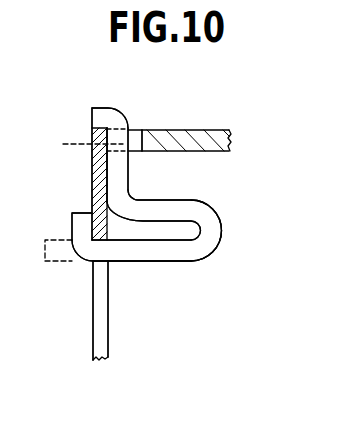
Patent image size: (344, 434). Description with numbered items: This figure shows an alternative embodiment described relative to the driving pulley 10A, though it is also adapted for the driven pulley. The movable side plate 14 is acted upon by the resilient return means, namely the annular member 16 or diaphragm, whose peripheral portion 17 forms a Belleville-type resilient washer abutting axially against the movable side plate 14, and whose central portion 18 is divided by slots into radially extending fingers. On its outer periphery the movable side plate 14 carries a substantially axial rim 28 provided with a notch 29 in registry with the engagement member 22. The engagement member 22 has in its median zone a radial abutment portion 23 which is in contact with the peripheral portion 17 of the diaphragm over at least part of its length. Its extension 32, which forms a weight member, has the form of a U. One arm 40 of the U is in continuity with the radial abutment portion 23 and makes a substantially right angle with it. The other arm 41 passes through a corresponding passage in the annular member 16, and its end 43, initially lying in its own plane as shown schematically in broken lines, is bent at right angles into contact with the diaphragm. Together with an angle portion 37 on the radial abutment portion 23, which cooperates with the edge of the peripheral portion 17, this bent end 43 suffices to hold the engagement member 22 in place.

The driving pulley 10A is at (90, 107).
The angle portion 37 is at (103, 108).
The notch 29 is at (137, 130).
The movable side plate 14 is at (208, 129).
The axial rim 28 is at (82, 142).
The peripheral portion 17 is at (92, 172).
The radial abutment portion 23 is at (118, 172).
The arm of the U 40 is at (175, 203).
The end of the other arm 43 is at (82, 225).
The other arm of the U 41 is at (150, 245).
The engagement member 22 is at (193, 262).
The extension forming weight member 32 is at (216, 245).
The central portion 18 is at (102, 343).
The annular member 16 is at (93, 321).